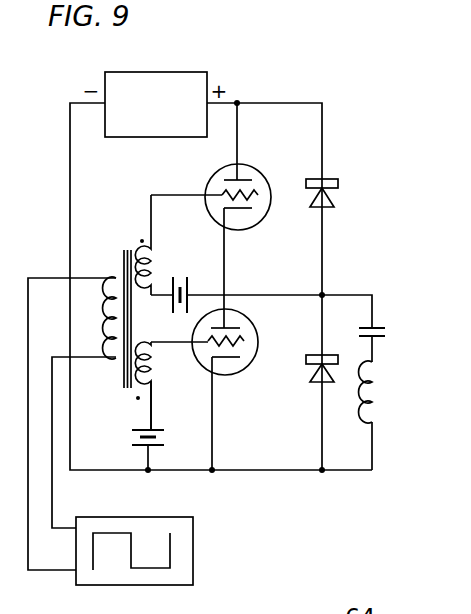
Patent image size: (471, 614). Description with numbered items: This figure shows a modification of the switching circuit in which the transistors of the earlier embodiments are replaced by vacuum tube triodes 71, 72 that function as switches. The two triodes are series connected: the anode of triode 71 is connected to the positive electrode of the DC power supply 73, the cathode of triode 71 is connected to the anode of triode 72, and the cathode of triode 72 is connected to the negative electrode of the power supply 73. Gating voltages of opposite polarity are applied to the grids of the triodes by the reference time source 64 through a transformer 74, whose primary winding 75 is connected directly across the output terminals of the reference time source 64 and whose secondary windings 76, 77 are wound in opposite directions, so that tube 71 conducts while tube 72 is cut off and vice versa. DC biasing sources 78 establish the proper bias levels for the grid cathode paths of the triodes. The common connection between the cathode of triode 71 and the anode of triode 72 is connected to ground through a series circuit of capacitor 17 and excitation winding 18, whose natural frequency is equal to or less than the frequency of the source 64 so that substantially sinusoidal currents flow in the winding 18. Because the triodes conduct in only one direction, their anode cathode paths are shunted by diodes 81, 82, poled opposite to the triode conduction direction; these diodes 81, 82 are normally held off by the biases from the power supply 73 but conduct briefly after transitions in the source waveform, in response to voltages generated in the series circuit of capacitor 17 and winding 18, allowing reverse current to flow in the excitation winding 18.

The DC power supply 73 is at (183, 72).
The vacuum tube triode 71 is at (252, 163).
The vacuum tube triode 72 is at (245, 368).
The diode 81 is at (335, 194).
The diode 82 is at (306, 359).
The transformer 74 is at (120, 378).
The primary winding 75 is at (117, 278).
The secondary winding 76 is at (140, 250).
The secondary winding 77 is at (150, 372).
The DC biasing source 78 is at (188, 290).
The capacitor 17 is at (380, 323).
The excitation winding 18 is at (380, 393).
The reference time source 64 is at (194, 541).